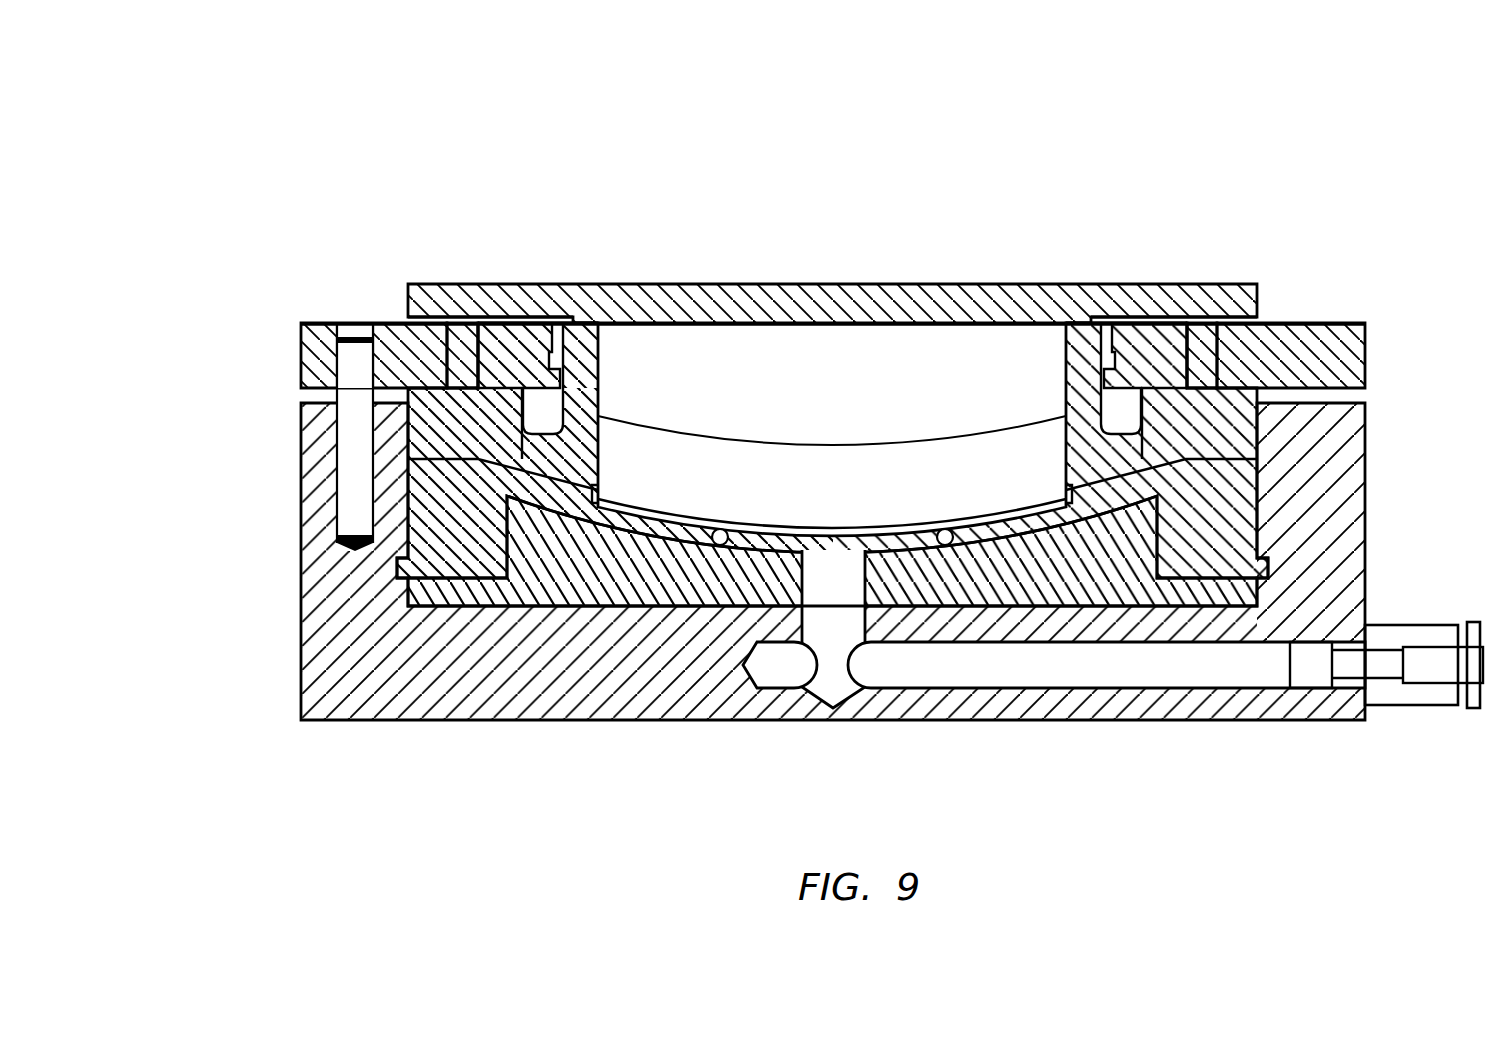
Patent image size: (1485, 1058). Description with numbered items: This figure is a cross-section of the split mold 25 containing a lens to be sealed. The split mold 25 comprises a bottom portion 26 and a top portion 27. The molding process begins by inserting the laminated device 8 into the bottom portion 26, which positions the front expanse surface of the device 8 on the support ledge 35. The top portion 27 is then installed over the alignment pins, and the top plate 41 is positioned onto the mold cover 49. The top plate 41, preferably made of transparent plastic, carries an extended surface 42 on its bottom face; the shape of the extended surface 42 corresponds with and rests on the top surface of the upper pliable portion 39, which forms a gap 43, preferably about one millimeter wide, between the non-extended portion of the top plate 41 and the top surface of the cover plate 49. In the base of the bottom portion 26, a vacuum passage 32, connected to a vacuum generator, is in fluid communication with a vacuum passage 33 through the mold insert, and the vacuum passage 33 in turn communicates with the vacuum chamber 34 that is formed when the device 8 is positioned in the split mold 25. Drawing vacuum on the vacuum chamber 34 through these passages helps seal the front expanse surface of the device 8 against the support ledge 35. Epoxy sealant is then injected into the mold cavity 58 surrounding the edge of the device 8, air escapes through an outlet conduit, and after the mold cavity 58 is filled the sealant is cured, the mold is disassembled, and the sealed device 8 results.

The laminated device 8 is at (703, 432).
The split mold 25 is at (815, 492).
The bottom portion 26 is at (297, 503).
The top portion 27 is at (297, 321).
The vacuum passage 32 is at (1133, 665).
The vacuum passage 33 is at (832, 566).
The vacuum chamber 34 is at (901, 548).
The support ledge 35 is at (643, 535).
The upper pliable portion 39 is at (579, 342).
The top plate 41 is at (784, 282).
The extended surface 42 is at (1091, 323).
The gap 43 is at (400, 320).
The mold cover 49 is at (1358, 321).
The mold cavity 58 is at (582, 508).